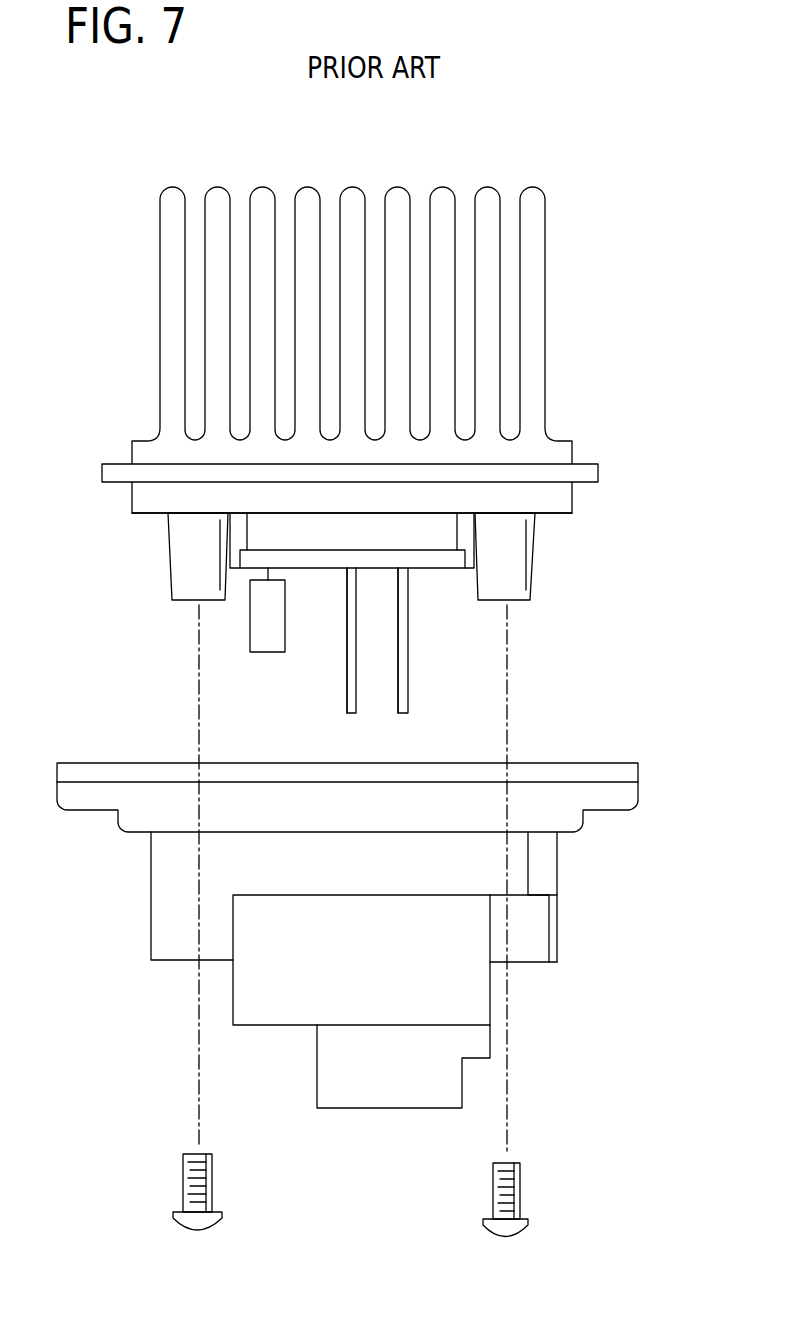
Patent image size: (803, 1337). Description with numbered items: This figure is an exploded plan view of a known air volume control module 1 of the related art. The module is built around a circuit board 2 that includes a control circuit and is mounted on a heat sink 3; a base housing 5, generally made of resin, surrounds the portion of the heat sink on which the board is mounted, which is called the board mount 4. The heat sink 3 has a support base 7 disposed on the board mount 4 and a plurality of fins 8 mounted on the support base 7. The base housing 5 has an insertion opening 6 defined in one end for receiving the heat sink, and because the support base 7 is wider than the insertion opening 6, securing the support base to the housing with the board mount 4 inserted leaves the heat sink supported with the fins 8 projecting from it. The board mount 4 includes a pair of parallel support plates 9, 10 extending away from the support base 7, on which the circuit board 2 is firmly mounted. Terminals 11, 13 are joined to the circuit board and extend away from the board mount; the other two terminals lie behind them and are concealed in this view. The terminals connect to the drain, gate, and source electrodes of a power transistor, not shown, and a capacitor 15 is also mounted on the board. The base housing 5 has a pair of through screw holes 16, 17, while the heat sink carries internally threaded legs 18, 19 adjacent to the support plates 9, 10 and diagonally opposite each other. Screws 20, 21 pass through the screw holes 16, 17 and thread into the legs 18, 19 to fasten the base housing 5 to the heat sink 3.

The air volume control module 1 is at (106, 121).
The circuit board 2 is at (441, 568).
The heat sink 3 is at (558, 430).
The board mount 4 is at (565, 508).
The base housing 5 is at (628, 800).
The insertion opening 6 is at (565, 763).
The support base 7 is at (590, 475).
The fins 8 is at (350, 190).
The parallel support plate 9 is at (237, 542).
The parallel support plate 10 is at (467, 543).
The terminal 11 is at (351, 713).
The terminal 13 is at (402, 713).
The capacitor 15 is at (268, 640).
The through screw hole 16 is at (172, 962).
The through screw hole 17 is at (522, 965).
The internally threaded leg 18 is at (188, 600).
The internally threaded leg 19 is at (515, 600).
The screw 20 is at (183, 1192).
The screw 21 is at (518, 1193).